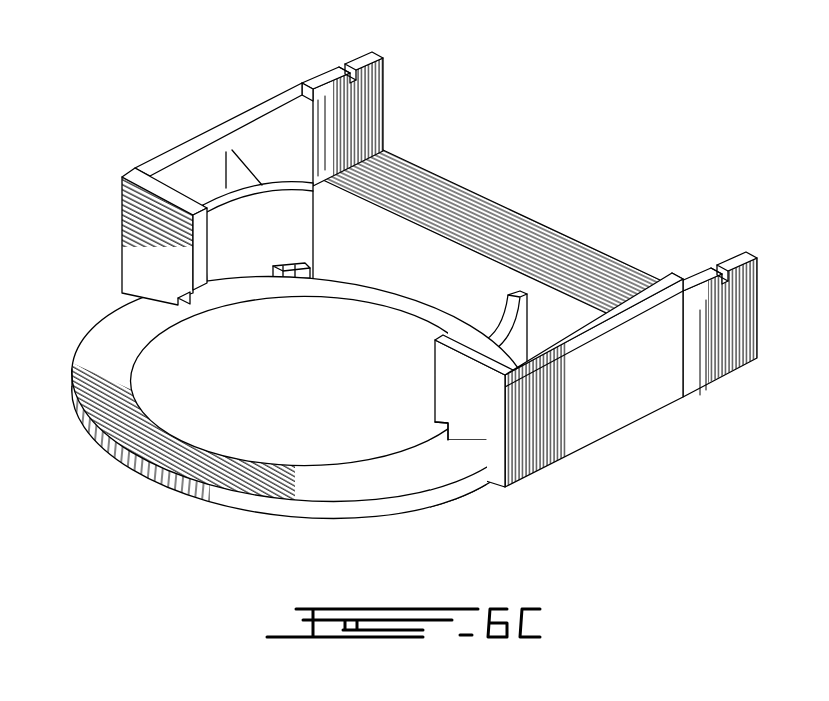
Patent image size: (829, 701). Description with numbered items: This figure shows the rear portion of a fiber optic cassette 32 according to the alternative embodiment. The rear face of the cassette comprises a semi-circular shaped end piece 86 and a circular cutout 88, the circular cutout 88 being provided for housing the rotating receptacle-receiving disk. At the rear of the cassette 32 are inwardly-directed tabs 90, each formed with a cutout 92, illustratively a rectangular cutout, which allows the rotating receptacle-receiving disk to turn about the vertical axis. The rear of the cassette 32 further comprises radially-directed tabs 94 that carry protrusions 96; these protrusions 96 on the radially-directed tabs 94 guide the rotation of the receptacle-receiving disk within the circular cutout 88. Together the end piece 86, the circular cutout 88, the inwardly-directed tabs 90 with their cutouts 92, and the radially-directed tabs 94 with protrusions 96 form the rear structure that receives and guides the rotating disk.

The cassette 32 is at (177, 113).
The semi-circular shaped end piece 86 is at (301, 417).
The circular cutout 88 is at (200, 442).
The inwardly-directed tab 90 is at (147, 217).
The cutout 92 is at (187, 296).
The radially-directed tab 94 is at (295, 212).
The protrusion 96 is at (305, 272).